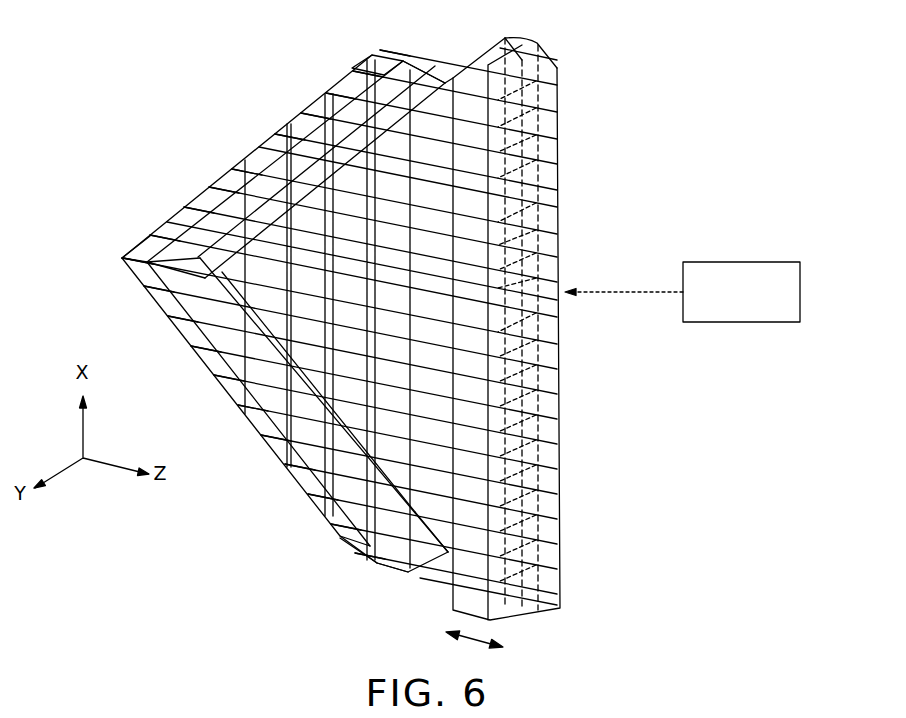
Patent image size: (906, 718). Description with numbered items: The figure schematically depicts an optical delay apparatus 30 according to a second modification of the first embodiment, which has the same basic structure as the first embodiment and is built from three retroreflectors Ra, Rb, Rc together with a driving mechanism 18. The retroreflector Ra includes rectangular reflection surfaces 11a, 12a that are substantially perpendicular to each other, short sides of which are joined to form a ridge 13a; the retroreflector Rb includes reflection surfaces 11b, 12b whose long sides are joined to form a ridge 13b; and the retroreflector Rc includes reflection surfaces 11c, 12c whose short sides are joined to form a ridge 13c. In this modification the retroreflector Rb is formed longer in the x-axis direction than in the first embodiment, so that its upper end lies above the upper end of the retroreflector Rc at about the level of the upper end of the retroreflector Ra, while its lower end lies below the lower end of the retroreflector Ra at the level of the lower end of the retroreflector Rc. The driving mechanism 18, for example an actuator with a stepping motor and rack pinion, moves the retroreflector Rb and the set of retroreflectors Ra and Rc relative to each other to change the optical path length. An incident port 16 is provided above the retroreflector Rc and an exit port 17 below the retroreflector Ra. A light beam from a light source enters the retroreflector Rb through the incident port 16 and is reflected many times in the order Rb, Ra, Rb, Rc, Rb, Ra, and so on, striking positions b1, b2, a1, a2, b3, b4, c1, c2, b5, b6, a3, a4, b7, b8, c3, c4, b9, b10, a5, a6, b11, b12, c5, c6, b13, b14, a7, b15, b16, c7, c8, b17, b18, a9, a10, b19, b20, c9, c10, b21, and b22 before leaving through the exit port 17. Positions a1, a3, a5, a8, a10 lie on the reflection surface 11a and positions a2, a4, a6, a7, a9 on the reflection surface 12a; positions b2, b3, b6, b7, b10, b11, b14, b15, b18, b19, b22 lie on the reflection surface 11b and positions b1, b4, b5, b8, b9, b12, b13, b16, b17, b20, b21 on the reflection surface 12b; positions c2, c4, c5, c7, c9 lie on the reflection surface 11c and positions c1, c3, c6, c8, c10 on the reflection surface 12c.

The optical delay apparatus 30 is at (143, 92).
The incident port 16 is at (405, 48).
The exit port 17 is at (335, 562).
The driving mechanism 18 is at (770, 262).
The reflection surface 11a is at (305, 92).
The reflection surface 11b is at (486, 62).
The reflection surface 11c is at (448, 80).
The reflection surface 12a is at (225, 375).
The reflection surface 12b is at (515, 45).
The reflection surface 12c is at (388, 566).
The ridge 13a is at (140, 265).
The ridge 13b is at (557, 207).
The ridge 13c is at (180, 305).
The retroreflector Ra is at (262, 118).
The retroreflector Rb is at (548, 55).
The retroreflector Rc is at (432, 72).
The reflection position a1 is at (372, 58).
The reflection position a2 is at (345, 512).
The reflection position a3 is at (248, 153).
The reflection position a4 is at (270, 420).
The reflection position a5 is at (165, 226).
The reflection position a6 is at (170, 288).
The reflection position a7 is at (215, 350).
The reflection position a8 is at (200, 190).
The reflection position a9 is at (310, 465).
The reflection position a10 is at (305, 115).
The reflection position b1 is at (557, 60).
The reflection position b2 is at (557, 85).
The reflection position b3 is at (557, 569).
The reflection position b4 is at (557, 544).
The reflection position b5 is at (557, 164).
The reflection position b6 is at (557, 190).
The reflection position b7 is at (557, 469).
The reflection position b8 is at (557, 444).
The reflection position b9 is at (557, 282).
The reflection position b10 is at (557, 317).
The reflection position b11 is at (557, 369).
The reflection position b12 is at (557, 344).
The reflection position b13 is at (557, 394).
The reflection position b14 is at (557, 419).
The reflection position b15 is at (557, 257).
The reflection position b16 is at (557, 234).
The reflection position b17 is at (557, 494).
The reflection position b18 is at (557, 519).
The reflection position b19 is at (557, 139).
The reflection position b20 is at (557, 112).
The reflection position b21 is at (557, 594).
The reflection position b22 is at (557, 605).
The reflection position c1 is at (325, 487).
The reflection position c2 is at (282, 144).
The reflection position c3 is at (250, 398).
The reflection position c4 is at (200, 210).
The reflection position c5 is at (165, 248).
The reflection position c6 is at (195, 330).
The reflection position c7 is at (235, 176).
The reflection position c8 is at (292, 443).
The reflection position c9 is at (355, 88).
The reflection position c10 is at (425, 568).